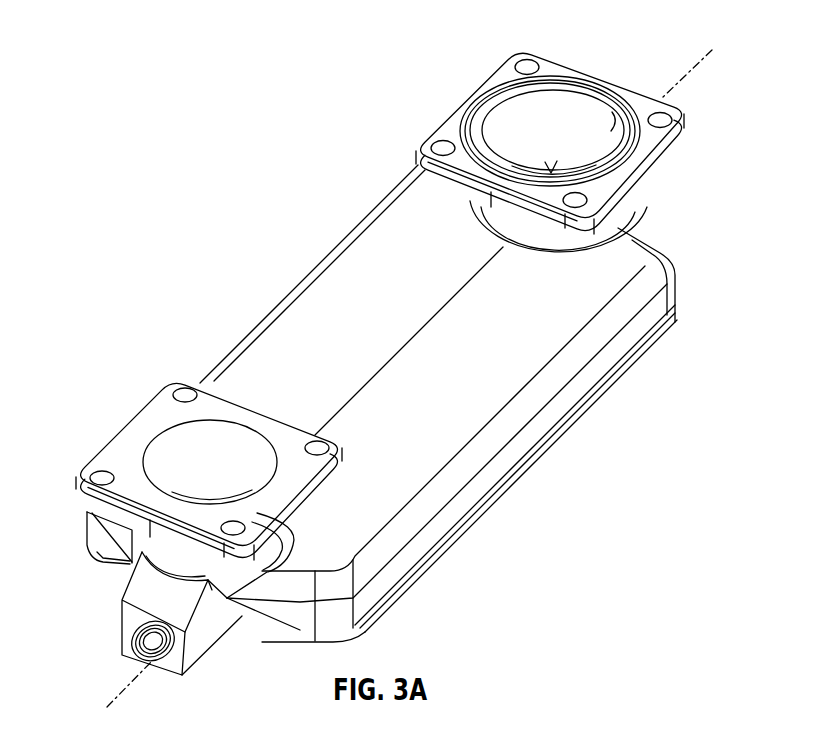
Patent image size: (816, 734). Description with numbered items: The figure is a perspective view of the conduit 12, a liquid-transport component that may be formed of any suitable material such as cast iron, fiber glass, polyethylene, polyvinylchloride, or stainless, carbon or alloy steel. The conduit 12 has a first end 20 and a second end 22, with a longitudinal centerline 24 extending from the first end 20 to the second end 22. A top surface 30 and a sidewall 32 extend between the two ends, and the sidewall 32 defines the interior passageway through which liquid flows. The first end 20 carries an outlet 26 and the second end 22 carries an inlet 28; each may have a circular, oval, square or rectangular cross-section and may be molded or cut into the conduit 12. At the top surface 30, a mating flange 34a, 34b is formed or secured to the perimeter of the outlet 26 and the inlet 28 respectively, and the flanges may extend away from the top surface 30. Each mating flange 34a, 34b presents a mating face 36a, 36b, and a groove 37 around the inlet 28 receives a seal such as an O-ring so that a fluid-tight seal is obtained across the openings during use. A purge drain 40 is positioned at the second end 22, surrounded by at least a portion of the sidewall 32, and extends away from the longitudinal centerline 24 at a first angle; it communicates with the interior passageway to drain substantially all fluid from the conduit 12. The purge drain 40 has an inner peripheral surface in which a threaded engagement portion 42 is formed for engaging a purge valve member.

The conduit 12 is at (387, 371).
The first end 20 is at (88, 543).
The second end 22 is at (633, 207).
The longitudinal centerline 24 is at (690, 72).
The outlet 26 is at (157, 443).
The inlet 28 is at (611, 112).
The top surface 30 is at (537, 353).
The sidewall 32 is at (433, 513).
The mating flange 34a is at (93, 455).
The mating flange 34b is at (680, 150).
The mating face 36a is at (170, 395).
The mating face 36b is at (573, 75).
The groove 37 is at (461, 117).
The purge drain 40 is at (133, 640).
The threaded engagement portion 42 is at (155, 668).